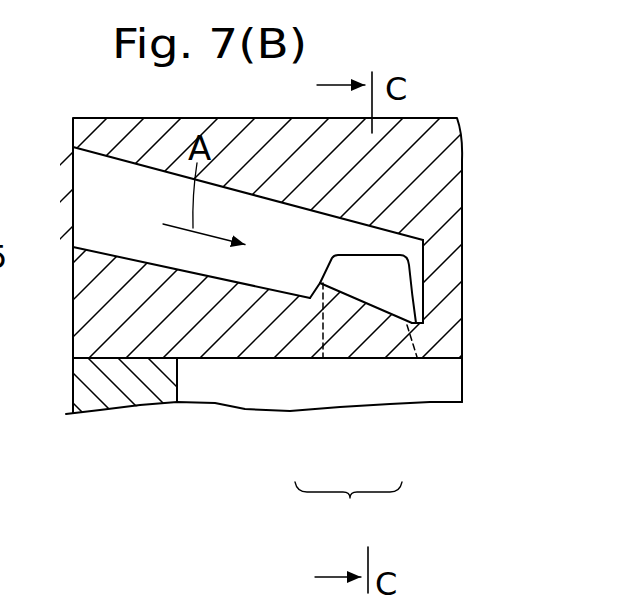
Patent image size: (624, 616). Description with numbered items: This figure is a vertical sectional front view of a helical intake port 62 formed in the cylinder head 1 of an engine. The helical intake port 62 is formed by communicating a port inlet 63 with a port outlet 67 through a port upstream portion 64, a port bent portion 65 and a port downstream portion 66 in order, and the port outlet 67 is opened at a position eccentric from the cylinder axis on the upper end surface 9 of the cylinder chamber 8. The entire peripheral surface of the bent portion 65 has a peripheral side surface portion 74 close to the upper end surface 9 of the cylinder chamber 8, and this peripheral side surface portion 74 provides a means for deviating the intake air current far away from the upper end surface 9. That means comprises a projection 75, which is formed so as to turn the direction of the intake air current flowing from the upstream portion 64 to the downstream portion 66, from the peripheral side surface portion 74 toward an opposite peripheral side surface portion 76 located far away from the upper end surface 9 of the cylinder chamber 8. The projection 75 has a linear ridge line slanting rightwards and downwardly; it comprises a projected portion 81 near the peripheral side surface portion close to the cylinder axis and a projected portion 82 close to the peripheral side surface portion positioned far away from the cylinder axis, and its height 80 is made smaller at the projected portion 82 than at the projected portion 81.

The cylinder head 1 is at (428, 131).
The cylinder chamber 8 is at (187, 377).
The upper end surface 9 is at (223, 360).
The helical intake port 62 is at (118, 216).
The port inlet 63 is at (72, 193).
The port upstream portion 64 is at (257, 233).
The port bent portion 65 is at (423, 240).
The port downstream portion 66 is at (395, 287).
The port outlet 67 is at (413, 360).
The peripheral side surface portion 74 is at (310, 298).
The projection 75 is at (333, 305).
The opposite peripheral side surface portion 76 is at (367, 187).
The height 80 is at (348, 512).
The projected portion 81 is at (336, 298).
The projected portion 82 is at (370, 310).